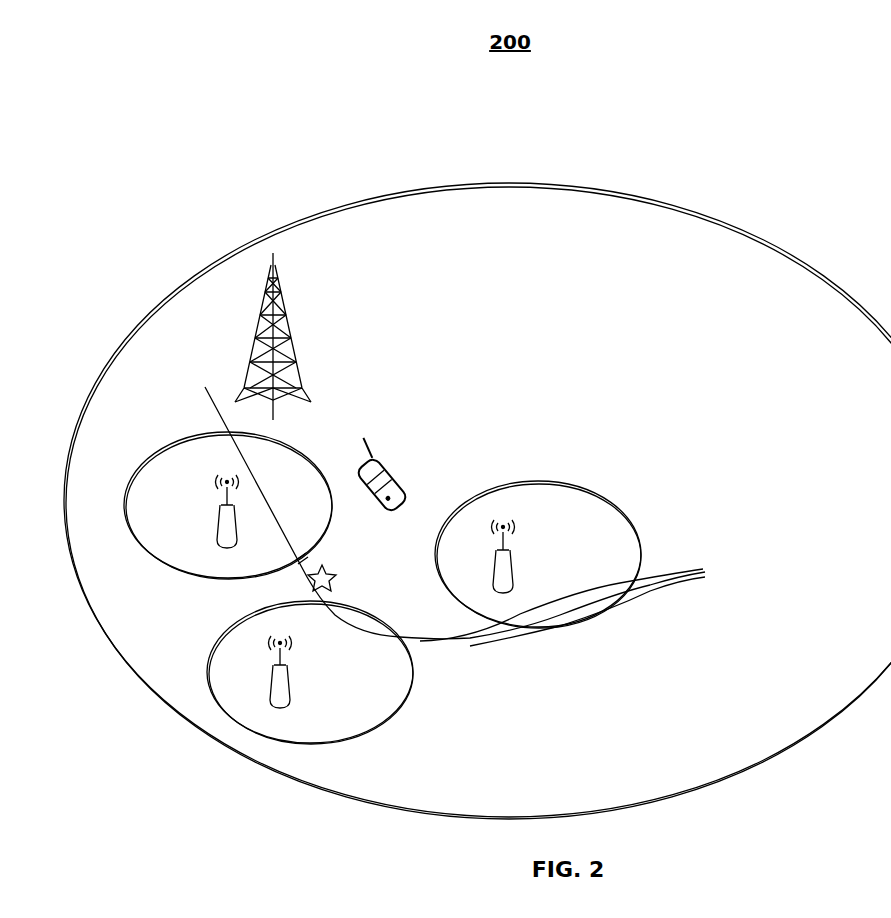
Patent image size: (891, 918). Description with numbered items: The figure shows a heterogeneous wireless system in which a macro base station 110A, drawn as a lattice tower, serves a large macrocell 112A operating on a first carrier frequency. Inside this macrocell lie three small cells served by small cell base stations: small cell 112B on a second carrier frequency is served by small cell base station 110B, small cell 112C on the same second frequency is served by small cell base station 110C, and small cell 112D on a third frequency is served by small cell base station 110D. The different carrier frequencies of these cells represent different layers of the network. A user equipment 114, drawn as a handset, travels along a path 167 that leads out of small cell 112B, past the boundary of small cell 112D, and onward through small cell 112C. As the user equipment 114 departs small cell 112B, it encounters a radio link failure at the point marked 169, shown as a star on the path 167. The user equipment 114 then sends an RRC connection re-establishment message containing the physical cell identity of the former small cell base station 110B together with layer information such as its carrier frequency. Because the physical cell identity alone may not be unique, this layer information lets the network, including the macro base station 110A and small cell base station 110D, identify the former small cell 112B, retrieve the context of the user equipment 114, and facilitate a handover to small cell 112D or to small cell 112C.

The macrocell 112A is at (447, 185).
The macro base station 110A is at (283, 318).
The small cell 112B is at (150, 565).
The small cell base station 110B is at (218, 527).
The small cell 112C is at (583, 490).
The small cell base station 110C is at (512, 566).
The small cell 112D is at (380, 725).
The small cell base station 110D is at (292, 678).
The user equipment 114 is at (405, 493).
The path 167 is at (470, 628).
The radio link failure point 169 is at (340, 582).